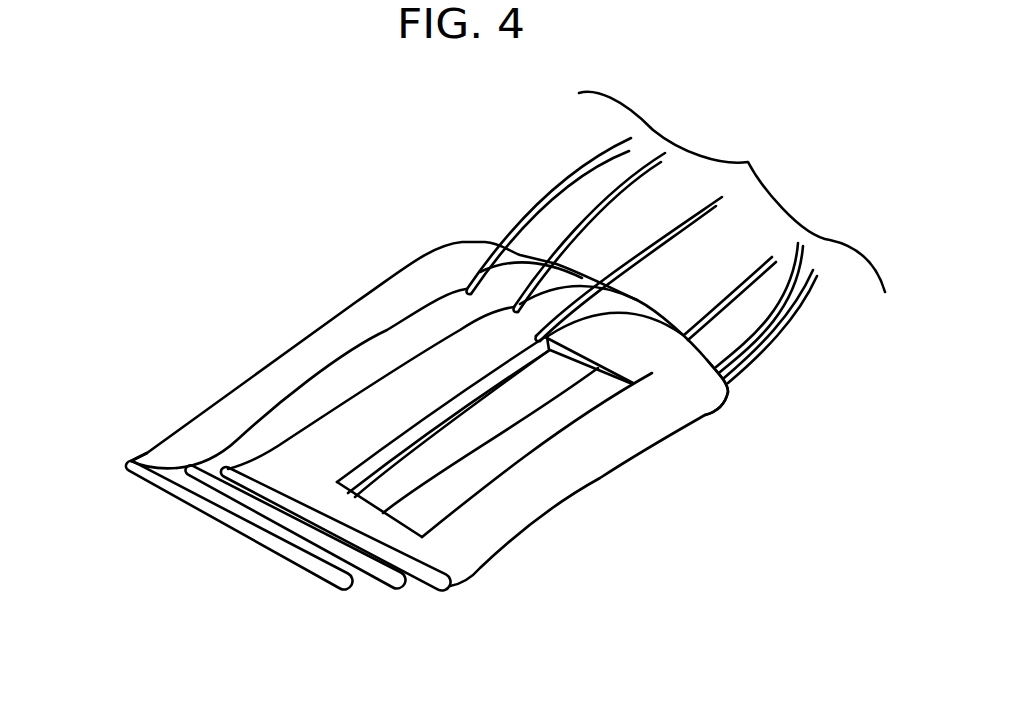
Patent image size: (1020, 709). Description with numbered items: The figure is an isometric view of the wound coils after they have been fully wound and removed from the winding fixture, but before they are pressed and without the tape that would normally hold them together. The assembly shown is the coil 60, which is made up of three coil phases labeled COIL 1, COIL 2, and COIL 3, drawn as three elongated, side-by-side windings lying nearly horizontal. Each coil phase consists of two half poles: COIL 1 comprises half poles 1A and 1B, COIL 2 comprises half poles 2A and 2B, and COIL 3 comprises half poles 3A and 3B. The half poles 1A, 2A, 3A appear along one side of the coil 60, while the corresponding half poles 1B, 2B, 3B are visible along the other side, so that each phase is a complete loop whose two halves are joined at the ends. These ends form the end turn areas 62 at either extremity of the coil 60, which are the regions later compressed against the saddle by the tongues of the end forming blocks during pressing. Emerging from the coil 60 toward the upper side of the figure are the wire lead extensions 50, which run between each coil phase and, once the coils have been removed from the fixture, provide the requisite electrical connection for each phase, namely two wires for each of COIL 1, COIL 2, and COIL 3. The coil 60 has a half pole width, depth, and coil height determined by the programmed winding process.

The coil 60 is at (308, 212).
The wire lead extensions 50 is at (732, 192).
The end turn areas 62 is at (135, 460).
The half pole 1A is at (321, 378).
The half pole 2A is at (371, 388).
The half pole 3A is at (485, 437).
The half pole 1B is at (451, 424).
The half pole 2B is at (490, 440).
The half pole 3B is at (537, 455).
The coil phase COIL 1 is at (160, 475).
The coil phase COIL 2 is at (272, 513).
The coil phase COIL 3 is at (378, 548).